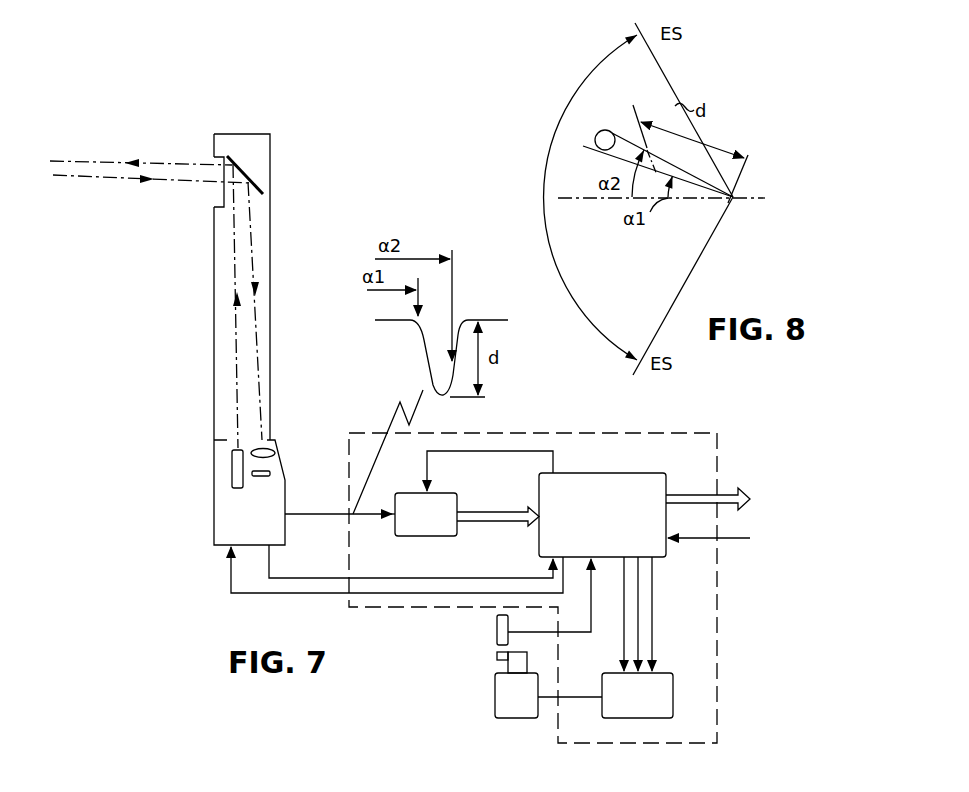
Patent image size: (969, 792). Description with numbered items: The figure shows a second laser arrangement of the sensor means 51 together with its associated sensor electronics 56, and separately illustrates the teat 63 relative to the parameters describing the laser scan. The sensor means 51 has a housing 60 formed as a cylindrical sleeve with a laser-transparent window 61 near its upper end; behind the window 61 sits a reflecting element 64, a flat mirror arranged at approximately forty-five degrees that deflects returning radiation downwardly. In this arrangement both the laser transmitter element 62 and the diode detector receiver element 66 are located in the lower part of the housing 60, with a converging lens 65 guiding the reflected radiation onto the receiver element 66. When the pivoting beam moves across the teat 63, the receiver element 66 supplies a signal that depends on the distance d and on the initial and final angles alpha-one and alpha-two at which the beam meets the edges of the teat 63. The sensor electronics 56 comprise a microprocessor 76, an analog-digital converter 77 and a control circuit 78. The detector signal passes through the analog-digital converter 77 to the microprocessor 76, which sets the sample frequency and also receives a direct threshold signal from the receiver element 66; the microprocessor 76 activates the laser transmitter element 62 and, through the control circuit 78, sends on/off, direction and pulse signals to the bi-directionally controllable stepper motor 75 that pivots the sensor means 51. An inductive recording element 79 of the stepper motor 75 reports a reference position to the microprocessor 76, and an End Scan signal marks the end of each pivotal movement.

In FIG. 7, the sensor means 51 is at (189, 339).
In FIG. 7, the housing 60 is at (214, 345).
In FIG. 7, the laser-transparent window 61 is at (214, 198).
In FIG. 7, the reflecting element 64 is at (252, 181).
In FIG. 7, the laser transmitter element 62 is at (233, 478).
In FIG. 7, the converging lens 65 is at (273, 449).
In FIG. 7, the receiver element 66 is at (272, 475).
In FIG. 7, the sensor electronics 56 is at (706, 460).
In FIG. 7, the analog-digital converter 77 is at (428, 537).
In FIG. 7, the microprocessor 76 is at (641, 480).
In FIG. 7, the control circuit 78 is at (667, 692).
In FIG. 7, the inductive recording element 79 is at (497, 632).
In FIG. 7, the stepper motor 75 is at (498, 703).
In FIG. 8, the teat 63 is at (600, 131).